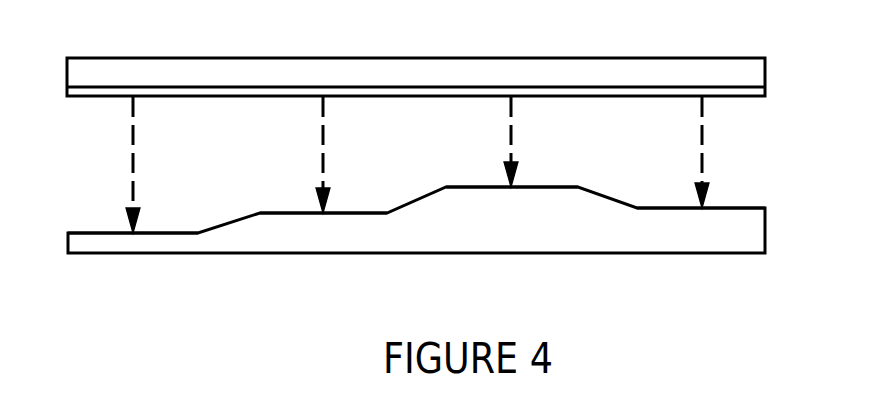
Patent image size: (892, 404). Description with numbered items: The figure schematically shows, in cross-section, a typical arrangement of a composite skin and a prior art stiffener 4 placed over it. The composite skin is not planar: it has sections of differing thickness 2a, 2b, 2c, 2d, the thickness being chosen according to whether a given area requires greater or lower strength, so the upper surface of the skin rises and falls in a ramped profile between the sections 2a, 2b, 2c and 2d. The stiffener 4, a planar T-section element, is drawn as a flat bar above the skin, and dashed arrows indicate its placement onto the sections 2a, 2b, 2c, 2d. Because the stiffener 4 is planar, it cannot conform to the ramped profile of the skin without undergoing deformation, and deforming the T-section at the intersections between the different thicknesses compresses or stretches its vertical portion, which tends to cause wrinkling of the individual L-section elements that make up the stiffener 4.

The stiffener 4 is at (401, 65).
The section of differing thickness 2a is at (168, 233).
The section of differing thickness 2b is at (362, 213).
The section of differing thickness 2c is at (556, 187).
The section of differing thickness 2d is at (676, 208).